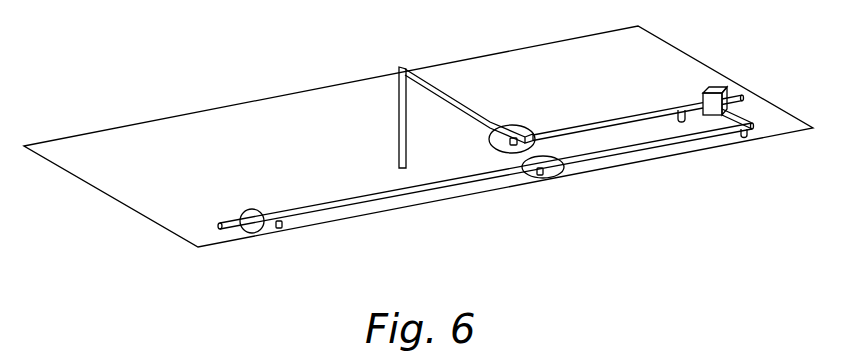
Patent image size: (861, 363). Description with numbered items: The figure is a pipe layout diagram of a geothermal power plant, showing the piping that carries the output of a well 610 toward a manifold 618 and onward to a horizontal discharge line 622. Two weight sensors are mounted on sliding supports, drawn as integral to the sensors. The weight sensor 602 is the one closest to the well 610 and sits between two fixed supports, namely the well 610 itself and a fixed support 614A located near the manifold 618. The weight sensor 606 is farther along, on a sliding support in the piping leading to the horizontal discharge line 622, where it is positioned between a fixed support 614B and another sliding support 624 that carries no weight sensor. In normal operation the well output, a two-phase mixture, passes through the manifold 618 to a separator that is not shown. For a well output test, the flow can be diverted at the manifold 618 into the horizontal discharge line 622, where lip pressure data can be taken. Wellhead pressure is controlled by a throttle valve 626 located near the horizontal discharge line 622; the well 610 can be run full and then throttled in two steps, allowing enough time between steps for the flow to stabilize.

The weight sensor 602 is at (513, 124).
The weight sensor 606 is at (562, 175).
The well 610 is at (397, 84).
The fixed support 614A is at (682, 110).
The fixed support 614B is at (747, 138).
The manifold 618 is at (718, 90).
The horizontal discharge line 622 is at (228, 233).
The sliding support 624 is at (282, 232).
The throttle valve 626 is at (258, 236).